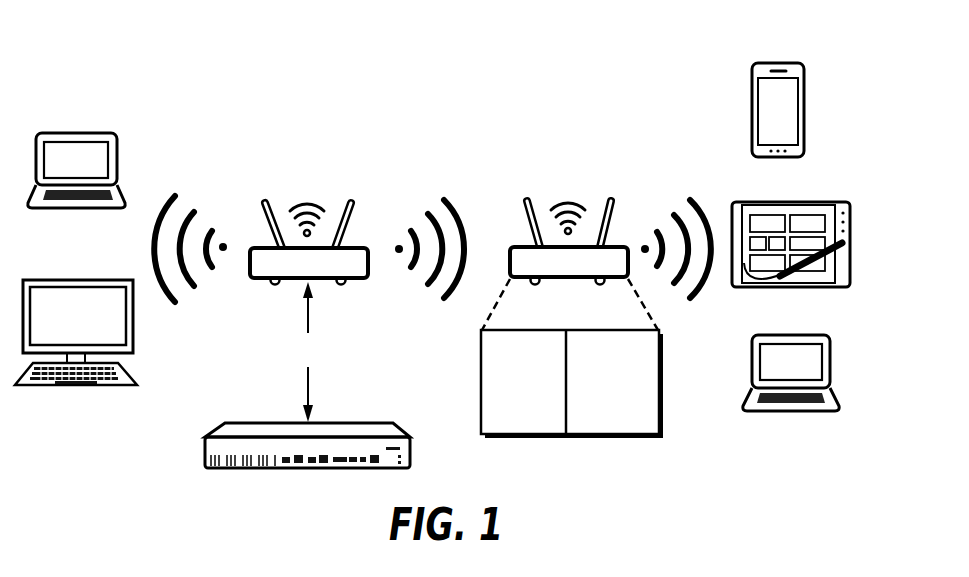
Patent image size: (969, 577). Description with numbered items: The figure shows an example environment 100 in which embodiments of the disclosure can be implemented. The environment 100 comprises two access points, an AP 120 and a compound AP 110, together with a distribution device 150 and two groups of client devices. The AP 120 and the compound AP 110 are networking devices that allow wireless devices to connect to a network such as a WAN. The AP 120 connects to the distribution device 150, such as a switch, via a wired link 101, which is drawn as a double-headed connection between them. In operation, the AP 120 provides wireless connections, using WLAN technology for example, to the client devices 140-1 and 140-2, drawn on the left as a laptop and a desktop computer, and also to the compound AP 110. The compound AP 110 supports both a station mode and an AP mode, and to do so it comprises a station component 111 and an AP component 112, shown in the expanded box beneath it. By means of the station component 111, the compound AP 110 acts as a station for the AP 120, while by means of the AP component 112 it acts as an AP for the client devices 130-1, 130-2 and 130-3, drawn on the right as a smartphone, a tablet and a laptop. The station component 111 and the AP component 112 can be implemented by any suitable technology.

The environment 100 is at (104, 40).
The compound AP 110 is at (600, 200).
The station component 111 is at (545, 366).
The AP component 112 is at (630, 366).
The AP 120 is at (352, 205).
The wired link 101 is at (320, 352).
The distribution device 150 is at (333, 423).
The client device 130-1 is at (775, 63).
The client device 130-2 is at (780, 202).
The client device 130-3 is at (790, 335).
The client device 140-1 is at (65, 133).
The client device 140-2 is at (38, 280).